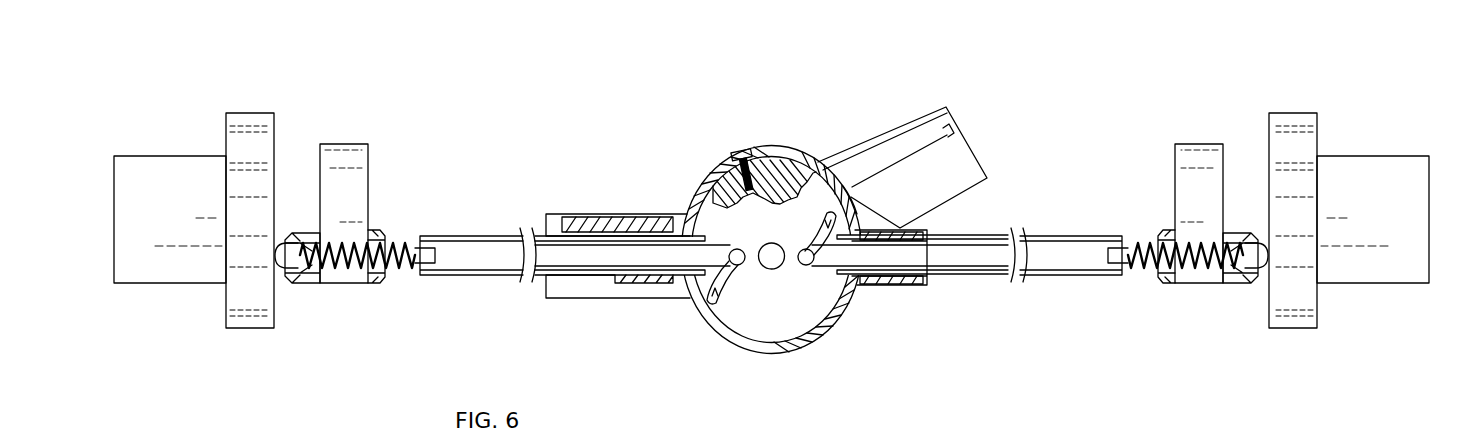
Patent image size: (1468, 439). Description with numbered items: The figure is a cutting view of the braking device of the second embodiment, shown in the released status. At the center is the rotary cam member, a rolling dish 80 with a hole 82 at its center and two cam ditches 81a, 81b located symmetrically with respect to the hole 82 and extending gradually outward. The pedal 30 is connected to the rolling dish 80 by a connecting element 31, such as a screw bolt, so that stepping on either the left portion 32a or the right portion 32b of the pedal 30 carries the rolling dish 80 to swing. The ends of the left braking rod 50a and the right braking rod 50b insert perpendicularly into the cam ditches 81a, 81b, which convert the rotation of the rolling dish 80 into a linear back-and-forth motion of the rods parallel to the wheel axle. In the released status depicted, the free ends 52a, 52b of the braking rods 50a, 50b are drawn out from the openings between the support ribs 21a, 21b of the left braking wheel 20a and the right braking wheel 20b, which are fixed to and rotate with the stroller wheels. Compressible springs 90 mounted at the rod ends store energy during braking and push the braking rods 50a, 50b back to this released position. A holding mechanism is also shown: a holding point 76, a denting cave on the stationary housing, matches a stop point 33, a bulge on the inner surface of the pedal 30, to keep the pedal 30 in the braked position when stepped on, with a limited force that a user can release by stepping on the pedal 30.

The left braking wheel 20a is at (253, 110).
The right braking wheel 20b is at (1288, 110).
The support ribs 21a is at (243, 328).
The right hub 21b is at (1285, 320).
The pedal 30 is at (675, 163).
The connecting element 31 is at (749, 149).
The left portion 32a is at (598, 216).
The right portion 32b is at (915, 120).
The stop point 33 is at (838, 165).
The left braking rod 50a is at (497, 262).
The right braking rod 50b is at (1050, 260).
The free end 52a is at (313, 286).
The free end 52b is at (1253, 258).
The holding point 76 is at (862, 212).
The rolling dish 80 is at (773, 252).
The cam ditch 81a is at (712, 303).
The cam ditch 81b is at (822, 200).
The hole 82 is at (772, 272).
The compressible spring 90 is at (348, 266).